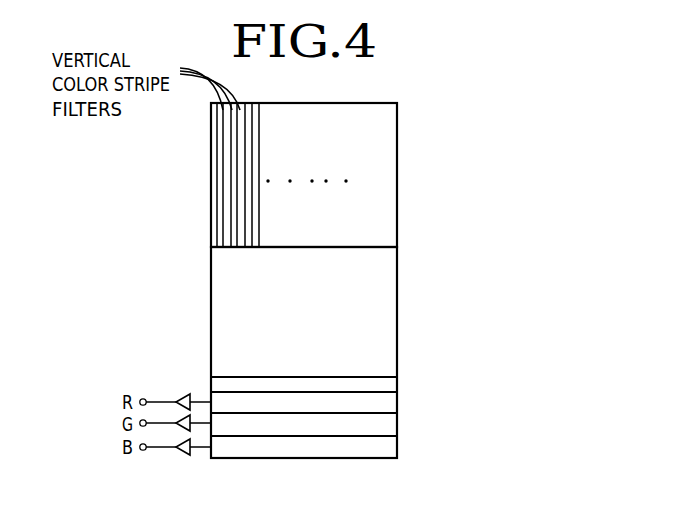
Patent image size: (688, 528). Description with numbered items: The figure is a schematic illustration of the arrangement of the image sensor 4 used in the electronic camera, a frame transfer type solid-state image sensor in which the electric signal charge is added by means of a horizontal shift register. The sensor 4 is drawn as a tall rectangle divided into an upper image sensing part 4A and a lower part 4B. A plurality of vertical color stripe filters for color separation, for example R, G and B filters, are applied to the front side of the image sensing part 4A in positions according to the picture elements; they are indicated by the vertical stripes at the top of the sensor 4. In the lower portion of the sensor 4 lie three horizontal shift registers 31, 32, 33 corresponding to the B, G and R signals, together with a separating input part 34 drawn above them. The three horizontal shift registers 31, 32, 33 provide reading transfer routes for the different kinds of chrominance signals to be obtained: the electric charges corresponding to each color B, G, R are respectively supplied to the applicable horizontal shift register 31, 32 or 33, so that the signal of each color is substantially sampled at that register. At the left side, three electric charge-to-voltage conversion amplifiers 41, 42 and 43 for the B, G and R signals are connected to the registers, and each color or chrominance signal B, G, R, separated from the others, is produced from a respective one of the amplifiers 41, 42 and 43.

The image sensor 4 is at (200, 184).
The image sensing part 4A is at (397, 125).
The lower portion of display panel 4B is at (397, 270).
The horizontal shift register 31 is at (397, 447).
The horizontal shift register 32 is at (397, 424).
The horizontal shift register 33 is at (397, 402).
The separating input part 34 is at (397, 380).
The electric charge-to-voltage conversion amplifier 41 is at (179, 452).
The electric charge-to-voltage conversion amplifier 42 is at (178, 416).
The electric charge-to-voltage conversion amplifier 43 is at (183, 393).